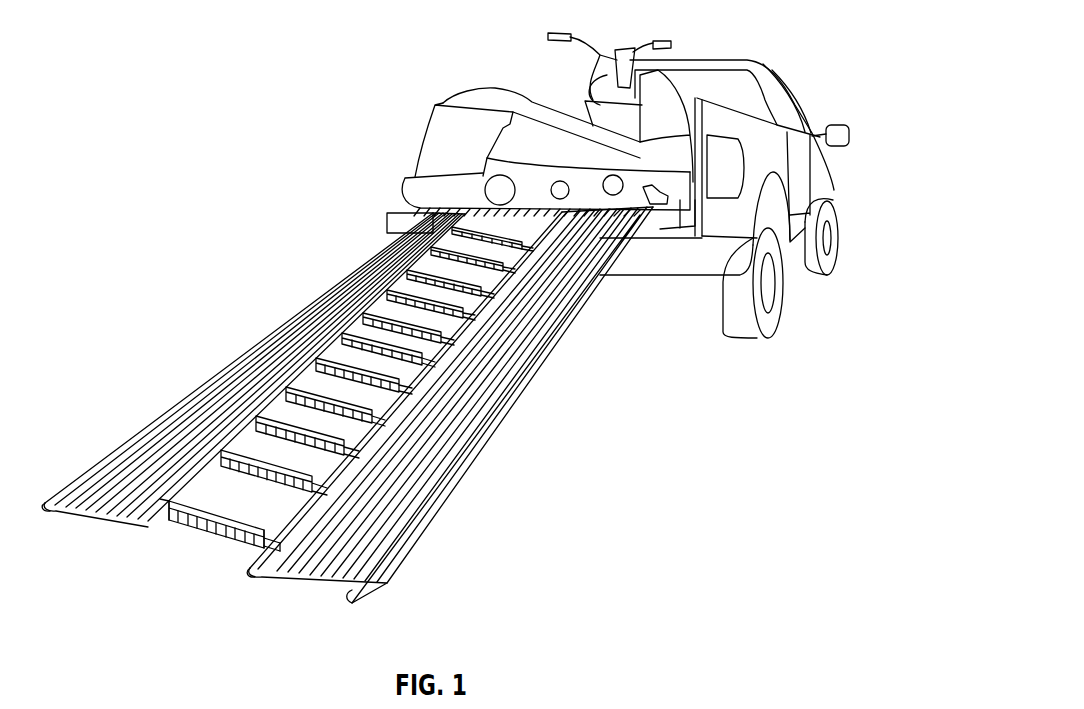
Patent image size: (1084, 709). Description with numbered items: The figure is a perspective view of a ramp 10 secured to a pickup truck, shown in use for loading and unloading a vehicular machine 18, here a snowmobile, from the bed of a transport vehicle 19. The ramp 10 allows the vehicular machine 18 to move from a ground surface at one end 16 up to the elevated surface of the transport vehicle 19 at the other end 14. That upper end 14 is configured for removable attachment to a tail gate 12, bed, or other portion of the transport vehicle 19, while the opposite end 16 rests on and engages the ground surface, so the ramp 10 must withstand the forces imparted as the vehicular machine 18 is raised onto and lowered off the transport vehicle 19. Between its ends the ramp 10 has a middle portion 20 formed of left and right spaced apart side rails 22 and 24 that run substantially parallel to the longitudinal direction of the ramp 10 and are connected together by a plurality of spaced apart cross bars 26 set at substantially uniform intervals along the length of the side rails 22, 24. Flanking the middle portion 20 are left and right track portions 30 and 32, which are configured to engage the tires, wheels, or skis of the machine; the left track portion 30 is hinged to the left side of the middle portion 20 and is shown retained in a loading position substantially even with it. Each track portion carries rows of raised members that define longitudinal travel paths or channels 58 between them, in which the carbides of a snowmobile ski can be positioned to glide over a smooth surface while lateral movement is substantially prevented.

The ramp 10 is at (398, 334).
The tail gate 12 is at (395, 211).
The end 14 is at (384, 241).
The end 16 is at (298, 580).
The vehicular machine 18 is at (483, 88).
The transport vehicle 19 is at (707, 61).
The middle portion 20 is at (267, 568).
The left side rail 22 is at (86, 557).
The right side rail 24 is at (237, 597).
The cross bars 26 is at (207, 457).
The left track portion 30 is at (216, 373).
The right track portion 32 is at (516, 380).
The channels 58 is at (90, 506).